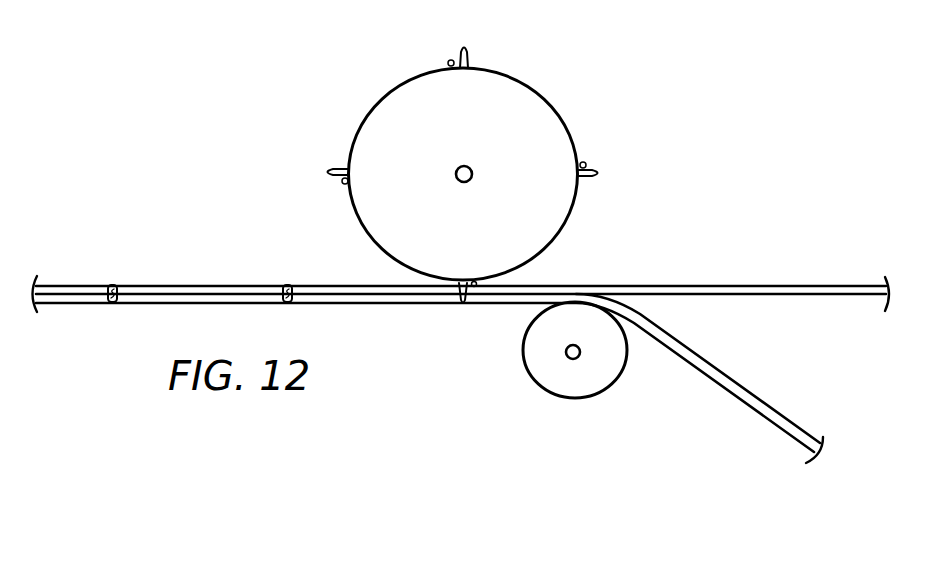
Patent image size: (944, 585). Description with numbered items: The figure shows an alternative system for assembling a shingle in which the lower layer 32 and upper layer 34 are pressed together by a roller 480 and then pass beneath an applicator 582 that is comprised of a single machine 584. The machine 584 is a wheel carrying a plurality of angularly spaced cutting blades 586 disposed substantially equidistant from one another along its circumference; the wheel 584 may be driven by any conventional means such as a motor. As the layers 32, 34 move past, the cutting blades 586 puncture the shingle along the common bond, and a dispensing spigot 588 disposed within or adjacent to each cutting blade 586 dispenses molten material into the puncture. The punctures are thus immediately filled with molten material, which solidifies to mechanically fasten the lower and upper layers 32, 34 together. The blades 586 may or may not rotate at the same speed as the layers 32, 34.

The lower layer 32 is at (767, 286).
The upper layer 34 is at (760, 402).
The roller 480 is at (522, 358).
The applicator 582 is at (356, 61).
The machine (wheel) 584 is at (573, 210).
The cutting blades 586 is at (468, 62).
The dispensing spigot 588 is at (347, 190).